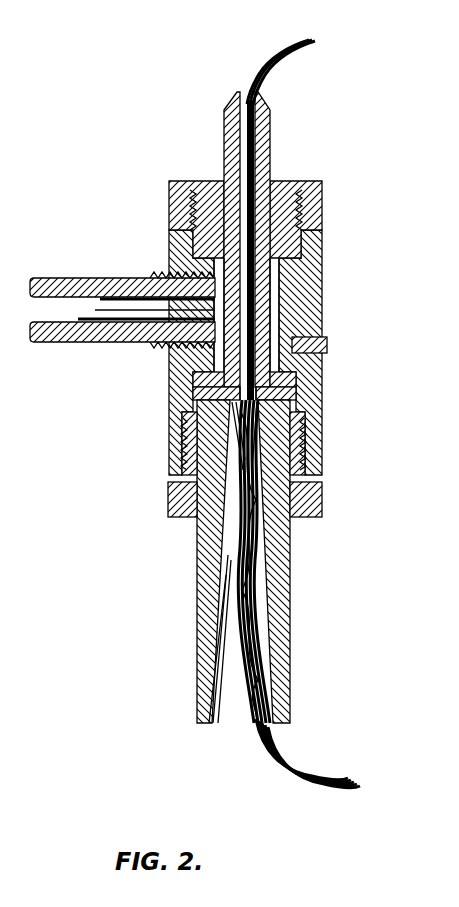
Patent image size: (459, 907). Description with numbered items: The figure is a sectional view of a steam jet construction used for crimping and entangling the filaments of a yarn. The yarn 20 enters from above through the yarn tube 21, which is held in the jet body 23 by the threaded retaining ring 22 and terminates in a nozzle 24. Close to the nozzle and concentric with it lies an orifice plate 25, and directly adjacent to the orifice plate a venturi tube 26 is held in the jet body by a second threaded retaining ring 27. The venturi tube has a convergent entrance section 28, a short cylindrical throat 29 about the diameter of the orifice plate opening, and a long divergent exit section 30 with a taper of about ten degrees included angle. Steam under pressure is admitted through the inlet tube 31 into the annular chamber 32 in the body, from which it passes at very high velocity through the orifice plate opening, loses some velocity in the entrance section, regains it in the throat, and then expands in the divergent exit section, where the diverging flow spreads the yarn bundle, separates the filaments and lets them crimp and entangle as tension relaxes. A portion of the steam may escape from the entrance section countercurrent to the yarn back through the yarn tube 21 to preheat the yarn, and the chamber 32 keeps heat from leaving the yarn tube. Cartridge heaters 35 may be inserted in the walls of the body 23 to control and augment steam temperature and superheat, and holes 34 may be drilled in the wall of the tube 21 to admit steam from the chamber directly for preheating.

The yarn 20 is at (278, 52).
The yarn tube 21 is at (225, 112).
The threaded retaining ring 22 is at (208, 181).
The jet body 23 is at (318, 213).
The nozzle 24 is at (300, 387).
The orifice plate 25 is at (290, 392).
The venturi tube 26 is at (290, 607).
The threaded retaining ring 27 is at (320, 500).
The convergent entrance section 28 is at (185, 418).
The cylindrical throat 29 is at (232, 457).
The divergent exit section 30 is at (215, 610).
The inlet tube 31 is at (95, 278).
The annular chamber 32 is at (195, 372).
The holes 34 is at (222, 284).
The cartridge heaters 35 is at (328, 344).